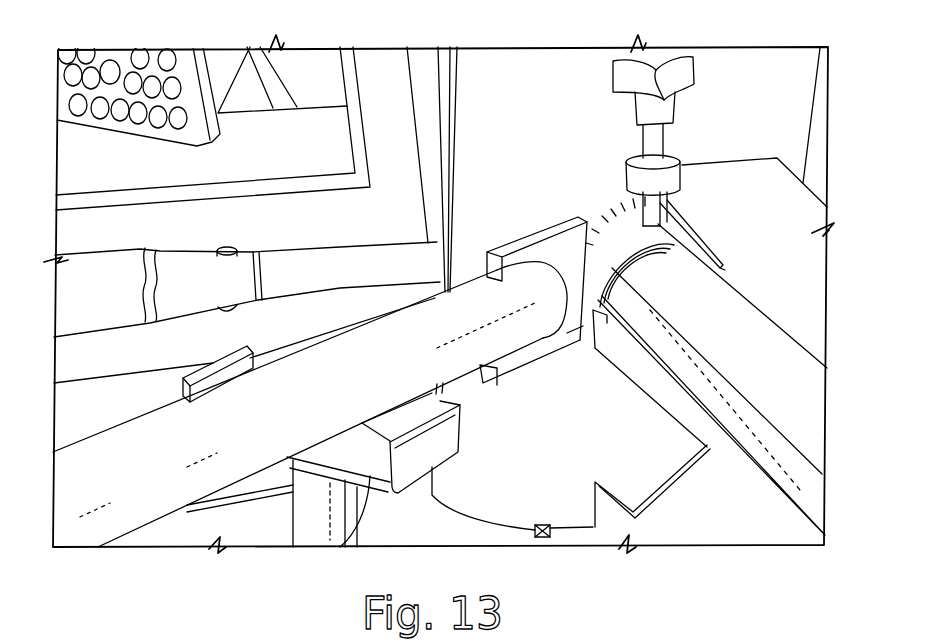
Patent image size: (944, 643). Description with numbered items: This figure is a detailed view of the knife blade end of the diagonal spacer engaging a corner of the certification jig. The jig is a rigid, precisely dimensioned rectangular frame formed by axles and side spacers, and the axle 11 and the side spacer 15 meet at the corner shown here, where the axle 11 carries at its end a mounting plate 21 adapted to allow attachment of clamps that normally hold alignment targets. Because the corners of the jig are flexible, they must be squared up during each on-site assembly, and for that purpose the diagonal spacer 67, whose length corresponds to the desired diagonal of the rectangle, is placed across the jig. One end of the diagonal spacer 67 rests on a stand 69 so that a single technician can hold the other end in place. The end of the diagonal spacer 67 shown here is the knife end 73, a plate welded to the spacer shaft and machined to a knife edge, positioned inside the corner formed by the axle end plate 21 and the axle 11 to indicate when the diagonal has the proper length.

The axle 11 is at (743, 322).
The side spacer 15 is at (80, 265).
The mounting plate 21 is at (455, 97).
The diagonal spacer 67 is at (167, 490).
The stand 69 is at (348, 546).
The knife end 73 is at (548, 236).